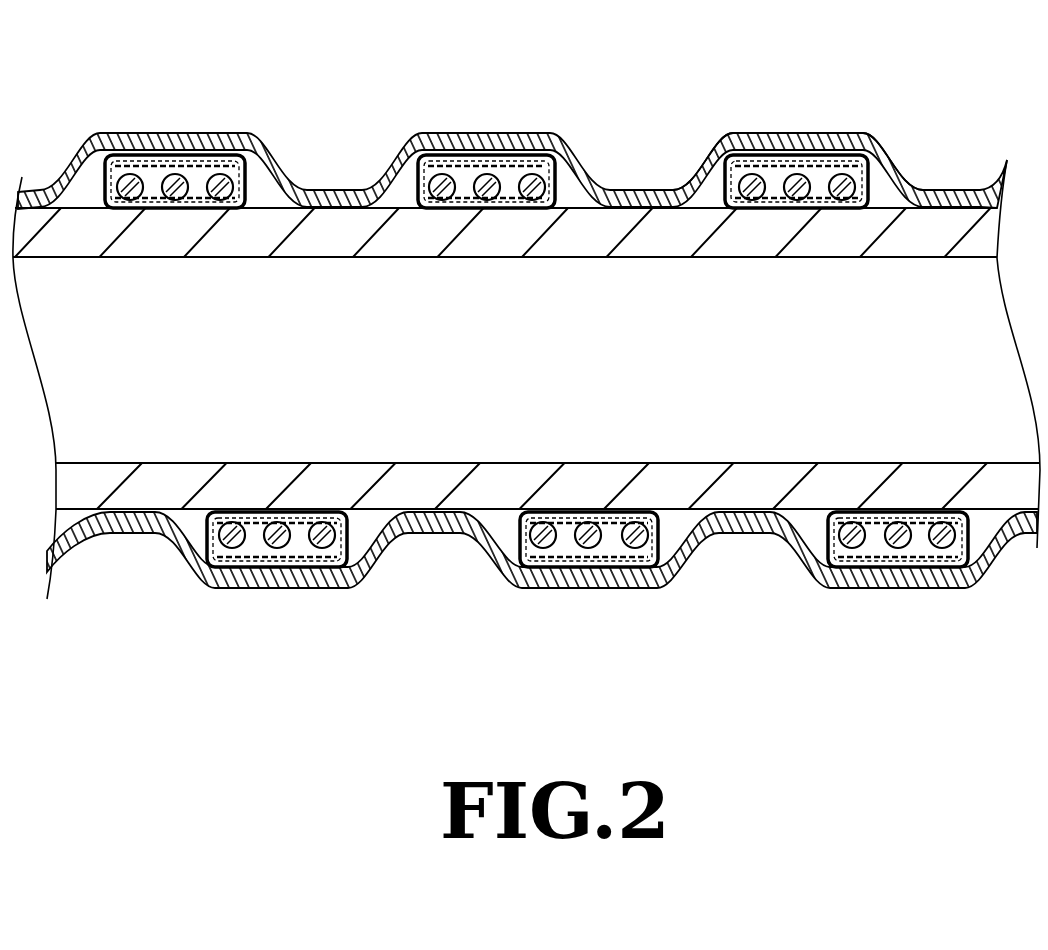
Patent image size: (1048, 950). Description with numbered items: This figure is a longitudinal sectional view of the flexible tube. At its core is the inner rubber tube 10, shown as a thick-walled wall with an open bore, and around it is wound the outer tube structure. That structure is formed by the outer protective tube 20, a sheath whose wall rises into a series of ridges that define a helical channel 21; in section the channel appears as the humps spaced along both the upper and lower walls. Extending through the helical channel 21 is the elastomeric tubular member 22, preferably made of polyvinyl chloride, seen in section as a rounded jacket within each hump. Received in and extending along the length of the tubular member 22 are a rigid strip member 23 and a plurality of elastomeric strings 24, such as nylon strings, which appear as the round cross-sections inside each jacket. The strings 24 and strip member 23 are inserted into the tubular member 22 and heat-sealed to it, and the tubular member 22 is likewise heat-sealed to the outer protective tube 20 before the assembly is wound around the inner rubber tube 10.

The inner rubber tube 10 is at (925, 233).
The outer protective tube 20 is at (635, 190).
The helical channel 21 is at (733, 140).
The elastomeric tubular member 22 is at (837, 143).
The rigid strip member 23 is at (790, 137).
The elastomeric strings 24 is at (745, 200).